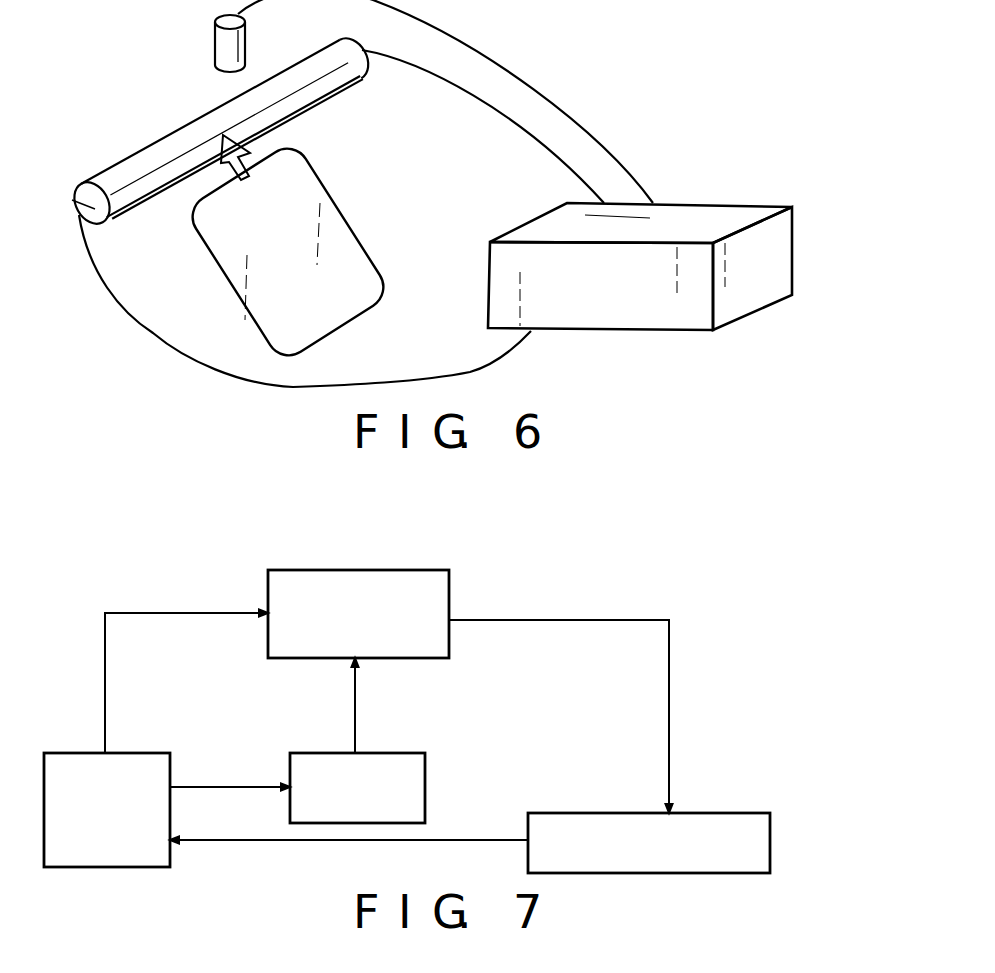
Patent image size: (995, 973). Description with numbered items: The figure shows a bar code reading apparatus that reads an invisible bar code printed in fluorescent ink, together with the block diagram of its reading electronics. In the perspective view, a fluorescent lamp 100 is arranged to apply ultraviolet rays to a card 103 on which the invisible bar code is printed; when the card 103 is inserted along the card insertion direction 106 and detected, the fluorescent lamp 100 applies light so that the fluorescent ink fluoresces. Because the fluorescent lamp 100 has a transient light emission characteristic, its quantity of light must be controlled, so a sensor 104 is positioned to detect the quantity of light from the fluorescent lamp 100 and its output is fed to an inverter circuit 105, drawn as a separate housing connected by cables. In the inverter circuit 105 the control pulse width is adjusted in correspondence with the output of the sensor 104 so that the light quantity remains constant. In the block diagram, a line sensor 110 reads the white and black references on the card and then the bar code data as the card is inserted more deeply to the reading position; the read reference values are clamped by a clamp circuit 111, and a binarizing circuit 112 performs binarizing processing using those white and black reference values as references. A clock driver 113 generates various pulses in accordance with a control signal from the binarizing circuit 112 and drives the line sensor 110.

In FIG. 6, the fluorescent lamp 100 is at (149, 147).
In FIG. 6, the card 103 is at (207, 233).
In FIG. 6, the sensor 104 is at (217, 57).
In FIG. 6, the inverter circuit 105 is at (632, 329).
In FIG. 6, the card insertion direction 106 is at (251, 151).
In FIG. 7, the line sensor 110 is at (170, 753).
In FIG. 7, the clamp circuit 111 is at (305, 753).
In FIG. 7, the binarizing circuit 112 is at (449, 582).
In FIG. 7, the clock driver 113 is at (610, 813).